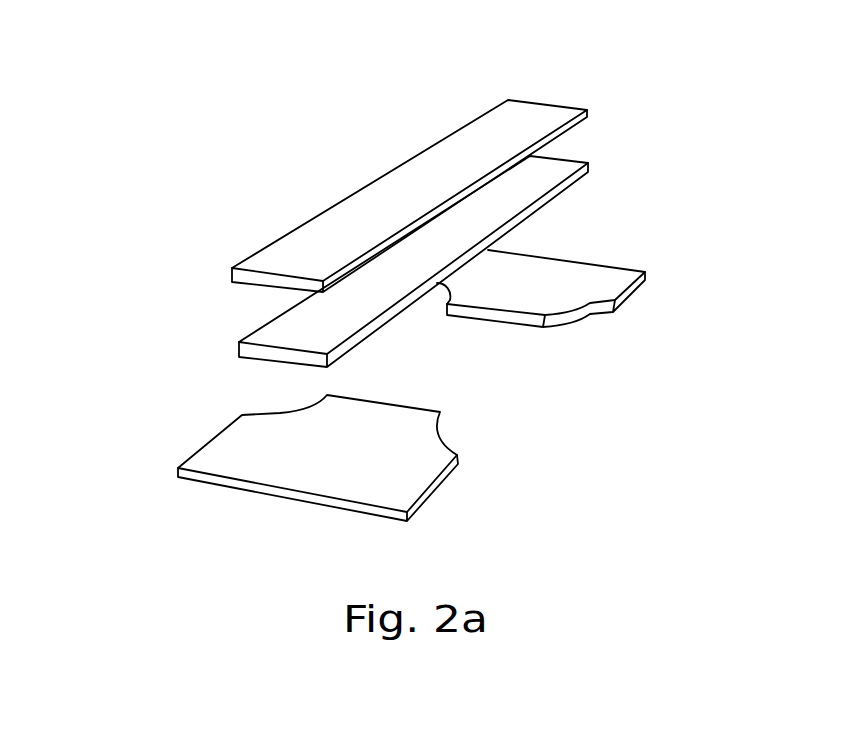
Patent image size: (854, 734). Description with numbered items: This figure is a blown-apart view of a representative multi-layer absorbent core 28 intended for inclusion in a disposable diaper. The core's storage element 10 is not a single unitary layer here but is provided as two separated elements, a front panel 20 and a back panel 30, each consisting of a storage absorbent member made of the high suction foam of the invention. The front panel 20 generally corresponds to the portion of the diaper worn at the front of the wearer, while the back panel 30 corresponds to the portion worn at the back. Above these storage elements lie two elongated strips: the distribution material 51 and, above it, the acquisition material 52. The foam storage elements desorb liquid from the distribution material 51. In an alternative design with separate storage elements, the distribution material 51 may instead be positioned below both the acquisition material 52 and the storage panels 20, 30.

The absorbent core 28 is at (273, 88).
The storage element 10 is at (415, 525).
The front panel 20 is at (565, 280).
The back panel 30 is at (237, 445).
The distribution material 51 is at (542, 180).
The acquisition material 52 is at (528, 118).